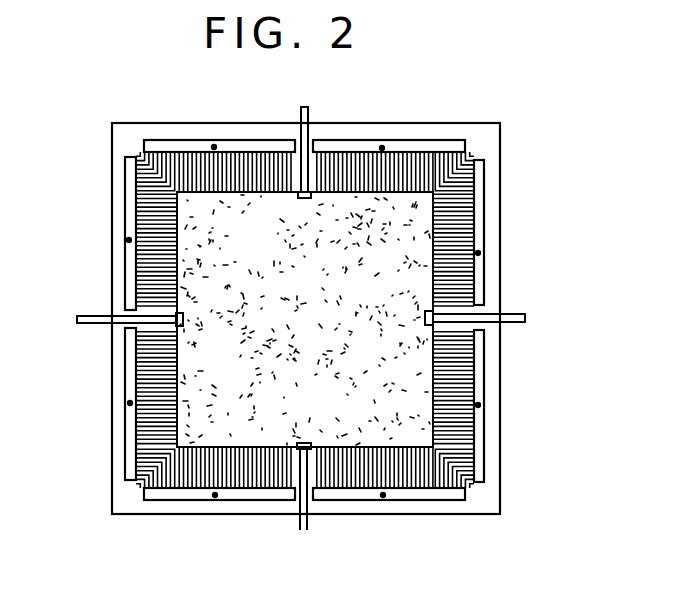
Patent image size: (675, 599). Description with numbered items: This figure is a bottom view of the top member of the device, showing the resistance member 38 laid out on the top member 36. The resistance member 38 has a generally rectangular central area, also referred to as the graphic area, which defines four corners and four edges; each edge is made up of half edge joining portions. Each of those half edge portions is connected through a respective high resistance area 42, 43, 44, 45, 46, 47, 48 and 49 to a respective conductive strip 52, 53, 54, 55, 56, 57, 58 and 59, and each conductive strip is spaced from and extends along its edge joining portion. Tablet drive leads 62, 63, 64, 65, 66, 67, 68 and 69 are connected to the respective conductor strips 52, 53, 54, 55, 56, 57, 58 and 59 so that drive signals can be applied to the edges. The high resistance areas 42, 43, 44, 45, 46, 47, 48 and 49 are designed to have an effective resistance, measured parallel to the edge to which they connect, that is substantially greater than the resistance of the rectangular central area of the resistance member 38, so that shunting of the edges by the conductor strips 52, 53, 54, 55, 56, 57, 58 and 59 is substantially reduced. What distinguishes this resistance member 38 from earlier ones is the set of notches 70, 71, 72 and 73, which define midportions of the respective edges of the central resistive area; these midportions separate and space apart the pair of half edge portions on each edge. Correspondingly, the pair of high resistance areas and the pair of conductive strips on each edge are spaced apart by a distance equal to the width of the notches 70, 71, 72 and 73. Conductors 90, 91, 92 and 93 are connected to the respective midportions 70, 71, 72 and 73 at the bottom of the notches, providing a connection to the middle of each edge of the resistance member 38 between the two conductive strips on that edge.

The substrate 36 is at (490, 144).
The resistance member 38 is at (405, 240).
The high resistance area 42 is at (457, 285).
The high resistance area 43 is at (455, 382).
The high resistance area 44 is at (437, 480).
The high resistance area 45 is at (190, 478).
The high resistance area 46 is at (157, 353).
The high resistance area 47 is at (155, 272).
The high resistance area 48 is at (197, 168).
The high resistance area 49 is at (382, 148).
The conductive strip 52 is at (475, 238).
The conductive strip 53 is at (475, 458).
The conductive strip 54 is at (362, 493).
The conductive strip 55 is at (155, 495).
The conductive strip 56 is at (130, 453).
The conductive strip 57 is at (130, 192).
The conductive strip 58 is at (175, 147).
The conductive strip 59 is at (443, 143).
The tablet drive lead 62 is at (478, 253).
The tablet drive lead 63 is at (478, 405).
The tablet drive lead 64 is at (383, 495).
The tablet drive lead 65 is at (215, 495).
The tablet drive lead 66 is at (22, 433).
The tablet drive lead 67 is at (37, 258).
The tablet drive lead 68 is at (218, 85).
The tablet drive lead 69 is at (392, 115).
The notch 70 is at (428, 316).
The notch 71 is at (305, 443).
The notch 72 is at (184, 325).
The notch 73 is at (303, 198).
The conductor 90 is at (523, 323).
The conductor 91 is at (302, 530).
The conductor 92 is at (77, 316).
The conductor 93 is at (303, 107).